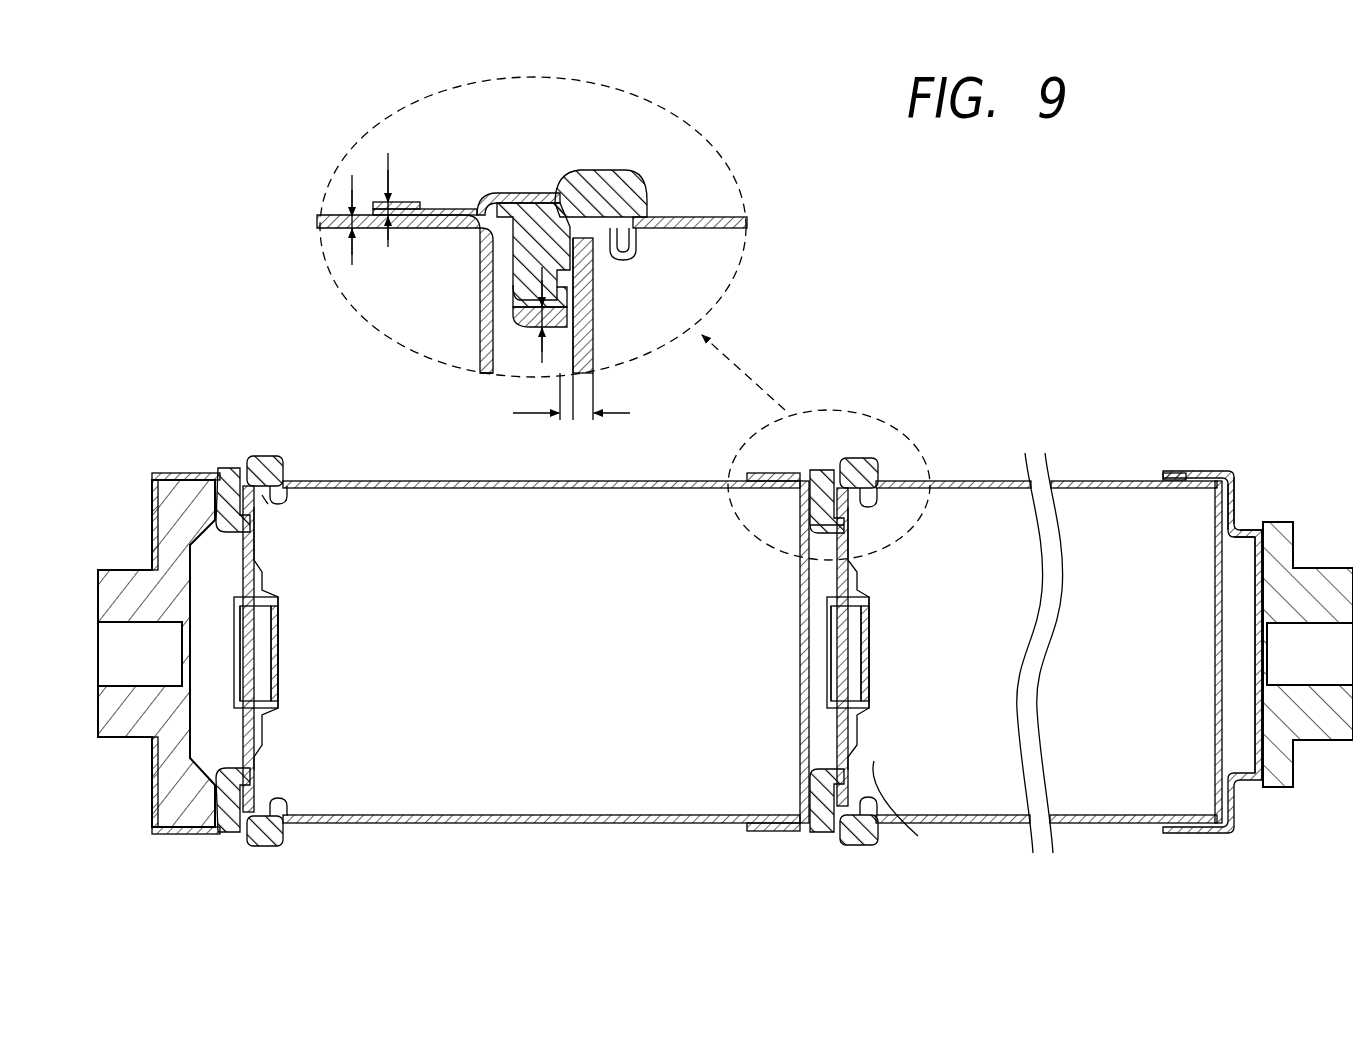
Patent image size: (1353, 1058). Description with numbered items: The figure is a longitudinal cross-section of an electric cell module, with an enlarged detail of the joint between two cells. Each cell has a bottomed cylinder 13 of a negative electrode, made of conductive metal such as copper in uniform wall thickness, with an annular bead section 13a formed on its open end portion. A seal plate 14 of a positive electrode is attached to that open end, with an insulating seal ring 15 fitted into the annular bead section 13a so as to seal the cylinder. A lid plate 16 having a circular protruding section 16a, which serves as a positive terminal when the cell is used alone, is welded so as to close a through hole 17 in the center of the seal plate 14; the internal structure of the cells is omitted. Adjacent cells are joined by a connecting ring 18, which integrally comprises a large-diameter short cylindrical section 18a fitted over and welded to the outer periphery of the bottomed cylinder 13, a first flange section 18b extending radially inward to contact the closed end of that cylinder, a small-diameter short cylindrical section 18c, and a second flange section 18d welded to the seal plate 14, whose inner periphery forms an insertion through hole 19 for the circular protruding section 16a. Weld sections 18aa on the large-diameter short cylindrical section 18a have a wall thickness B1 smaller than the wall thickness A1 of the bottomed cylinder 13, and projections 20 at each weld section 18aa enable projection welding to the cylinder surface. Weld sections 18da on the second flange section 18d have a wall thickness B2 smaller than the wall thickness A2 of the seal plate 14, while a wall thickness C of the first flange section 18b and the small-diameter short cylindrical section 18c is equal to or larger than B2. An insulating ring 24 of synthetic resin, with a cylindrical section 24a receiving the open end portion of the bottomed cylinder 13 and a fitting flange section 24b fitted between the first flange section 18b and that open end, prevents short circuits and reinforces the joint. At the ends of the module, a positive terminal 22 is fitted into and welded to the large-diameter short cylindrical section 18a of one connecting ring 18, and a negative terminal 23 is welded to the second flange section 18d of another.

The bottomed cylinder 13 is at (330, 217).
The annular bead section 13a is at (580, 192).
The seal plate 14 is at (593, 347).
The insulating seal ring 15 is at (620, 262).
The lid plate 16 is at (282, 620).
The circular protruding section 16a is at (240, 630).
The through hole 17 is at (282, 655).
The connecting ring 18 is at (481, 190).
The large-diameter short cylindrical section 18a is at (495, 200).
The weld sections 18aa is at (395, 204).
The first flange section 18b is at (1240, 495).
The small-diameter short cylindrical section 18c is at (1250, 531).
The second flange section 18d is at (1254, 580).
The weld sections 18da is at (560, 376).
The insertion through hole 19 is at (1254, 690).
The projections 20 is at (450, 216).
The positive terminal 22 is at (130, 742).
The negative terminal 23 is at (1305, 548).
The insulating ring 24 is at (560, 176).
The cylindrical section 24a is at (630, 215).
The fitting flange section 24b is at (500, 320).
The wall thickness of the bottomed cylinder A1 is at (350, 245).
The wall thickness of the weld sections B1 is at (395, 200).
The wall thickness of the seal plate A2 is at (595, 420).
The wall thickness of the second flange section B2 is at (562, 420).
The wall thickness of the first flange section and small-diameter short cylindrical C is at (548, 302).